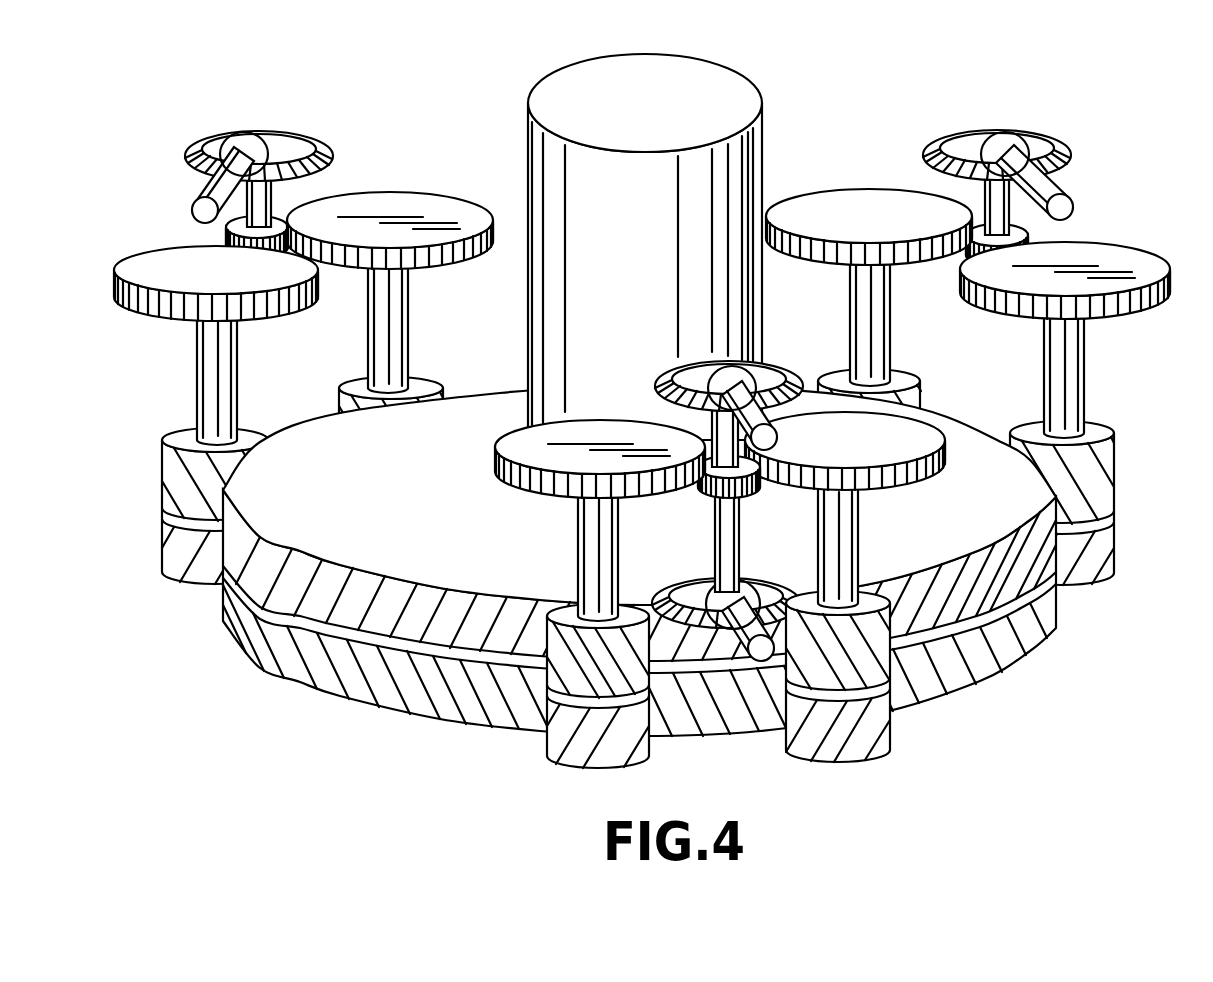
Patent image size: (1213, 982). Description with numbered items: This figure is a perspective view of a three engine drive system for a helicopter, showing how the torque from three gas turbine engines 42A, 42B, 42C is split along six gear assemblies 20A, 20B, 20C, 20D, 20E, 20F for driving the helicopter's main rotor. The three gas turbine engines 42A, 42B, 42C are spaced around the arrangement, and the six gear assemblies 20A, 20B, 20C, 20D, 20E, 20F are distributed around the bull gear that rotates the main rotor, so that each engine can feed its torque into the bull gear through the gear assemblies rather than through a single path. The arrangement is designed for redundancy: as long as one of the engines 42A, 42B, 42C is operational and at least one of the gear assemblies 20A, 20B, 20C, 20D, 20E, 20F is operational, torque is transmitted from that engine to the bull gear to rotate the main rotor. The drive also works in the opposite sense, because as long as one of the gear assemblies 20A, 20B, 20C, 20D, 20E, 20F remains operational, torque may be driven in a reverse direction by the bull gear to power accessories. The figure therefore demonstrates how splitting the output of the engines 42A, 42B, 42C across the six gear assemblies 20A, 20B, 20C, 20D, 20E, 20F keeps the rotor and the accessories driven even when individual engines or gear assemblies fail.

The gear assembly 20A is at (588, 544).
The gear assembly 20B is at (856, 539).
The gear assembly 20C is at (1073, 367).
The gear assembly 20D is at (890, 338).
The gear assembly 20E is at (396, 326).
The gear assembly 20F is at (222, 364).
The gas turbine engine 42A is at (762, 385).
The gas turbine engine 42B is at (1050, 184).
The gas turbine engine 42C is at (199, 191).